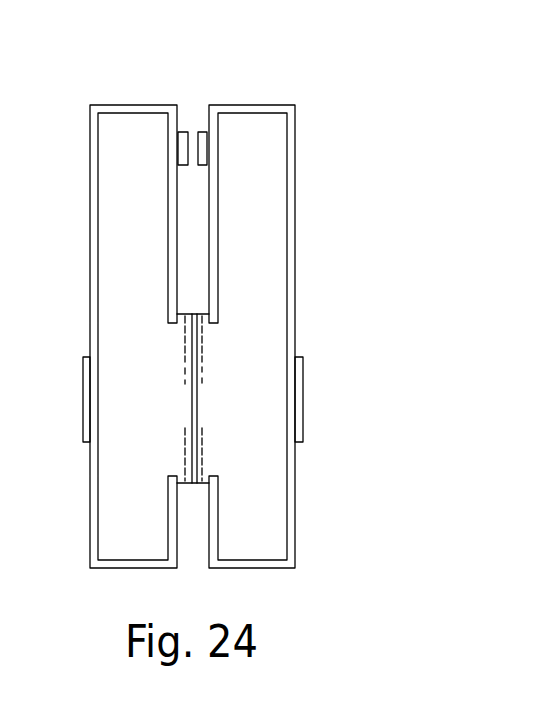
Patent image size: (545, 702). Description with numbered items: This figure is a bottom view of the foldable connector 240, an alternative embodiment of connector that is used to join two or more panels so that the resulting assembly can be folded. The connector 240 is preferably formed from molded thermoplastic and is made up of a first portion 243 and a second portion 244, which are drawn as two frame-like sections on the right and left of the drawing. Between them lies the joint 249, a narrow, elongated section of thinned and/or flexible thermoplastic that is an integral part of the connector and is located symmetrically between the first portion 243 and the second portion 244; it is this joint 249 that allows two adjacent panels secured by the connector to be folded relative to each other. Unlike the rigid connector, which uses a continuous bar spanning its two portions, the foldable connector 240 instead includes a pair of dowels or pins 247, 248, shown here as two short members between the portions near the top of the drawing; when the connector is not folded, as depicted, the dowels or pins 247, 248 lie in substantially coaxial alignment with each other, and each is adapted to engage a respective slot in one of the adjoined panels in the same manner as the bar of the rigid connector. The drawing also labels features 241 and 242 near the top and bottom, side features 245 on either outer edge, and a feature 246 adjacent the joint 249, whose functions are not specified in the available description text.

The foldable connector 240 is at (337, 192).
The upper section 241 is at (270, 68).
The lower section 242 is at (262, 579).
The first portion 243 is at (282, 105).
The second portion 244 is at (103, 105).
The side tab 245 is at (83, 398).
The slot 246 is at (207, 375).
The dowel or pin 247 is at (203, 132).
The dowel or pin 248 is at (183, 132).
The joint 249 is at (193, 407).